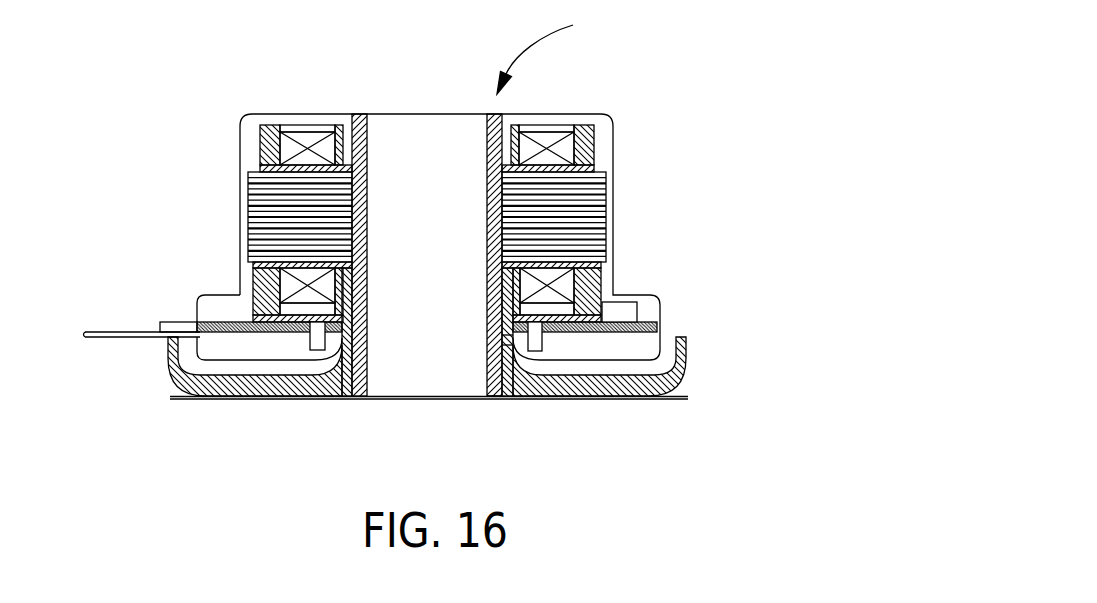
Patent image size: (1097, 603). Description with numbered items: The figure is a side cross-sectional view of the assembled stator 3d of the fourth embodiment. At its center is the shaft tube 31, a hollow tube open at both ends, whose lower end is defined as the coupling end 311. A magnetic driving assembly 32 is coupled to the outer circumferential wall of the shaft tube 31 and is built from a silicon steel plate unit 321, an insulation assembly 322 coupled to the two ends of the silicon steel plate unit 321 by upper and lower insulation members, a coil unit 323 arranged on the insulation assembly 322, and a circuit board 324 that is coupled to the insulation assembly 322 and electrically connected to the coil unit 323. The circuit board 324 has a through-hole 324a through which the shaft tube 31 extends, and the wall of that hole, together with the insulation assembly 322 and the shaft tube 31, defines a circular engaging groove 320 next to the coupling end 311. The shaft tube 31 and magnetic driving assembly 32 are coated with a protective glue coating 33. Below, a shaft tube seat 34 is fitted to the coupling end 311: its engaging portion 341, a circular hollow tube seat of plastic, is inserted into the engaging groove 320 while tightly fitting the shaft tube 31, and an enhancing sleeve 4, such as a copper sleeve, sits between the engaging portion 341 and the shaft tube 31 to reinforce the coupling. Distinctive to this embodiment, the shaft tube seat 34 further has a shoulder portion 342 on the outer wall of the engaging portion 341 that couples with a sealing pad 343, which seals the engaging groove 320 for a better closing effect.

The stator 3d is at (549, 55).
The shaft tube 31 is at (412, 130).
The coupling end 311 is at (494, 396).
The magnetic driving assembly 32 is at (775, 75).
The silicon steel plate unit 321 is at (595, 188).
The insulation assembly 322 is at (590, 285).
The coil unit 323 is at (560, 143).
The circuit board 324 is at (617, 320).
The through-hole 324a is at (508, 328).
The engaging groove 320 is at (516, 303).
The protective glue coating 33 is at (245, 150).
The shaft tube seat 34 is at (658, 393).
The engaging portion 341 is at (502, 292).
The shoulder portion 342 is at (505, 345).
The sealing pad 343 is at (514, 335).
The enhancing sleeve 4 is at (347, 392).